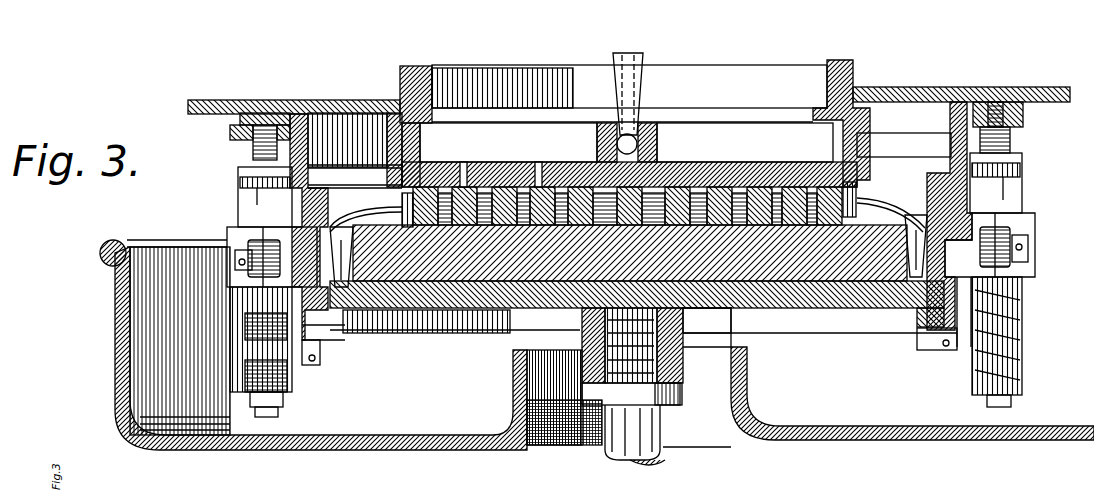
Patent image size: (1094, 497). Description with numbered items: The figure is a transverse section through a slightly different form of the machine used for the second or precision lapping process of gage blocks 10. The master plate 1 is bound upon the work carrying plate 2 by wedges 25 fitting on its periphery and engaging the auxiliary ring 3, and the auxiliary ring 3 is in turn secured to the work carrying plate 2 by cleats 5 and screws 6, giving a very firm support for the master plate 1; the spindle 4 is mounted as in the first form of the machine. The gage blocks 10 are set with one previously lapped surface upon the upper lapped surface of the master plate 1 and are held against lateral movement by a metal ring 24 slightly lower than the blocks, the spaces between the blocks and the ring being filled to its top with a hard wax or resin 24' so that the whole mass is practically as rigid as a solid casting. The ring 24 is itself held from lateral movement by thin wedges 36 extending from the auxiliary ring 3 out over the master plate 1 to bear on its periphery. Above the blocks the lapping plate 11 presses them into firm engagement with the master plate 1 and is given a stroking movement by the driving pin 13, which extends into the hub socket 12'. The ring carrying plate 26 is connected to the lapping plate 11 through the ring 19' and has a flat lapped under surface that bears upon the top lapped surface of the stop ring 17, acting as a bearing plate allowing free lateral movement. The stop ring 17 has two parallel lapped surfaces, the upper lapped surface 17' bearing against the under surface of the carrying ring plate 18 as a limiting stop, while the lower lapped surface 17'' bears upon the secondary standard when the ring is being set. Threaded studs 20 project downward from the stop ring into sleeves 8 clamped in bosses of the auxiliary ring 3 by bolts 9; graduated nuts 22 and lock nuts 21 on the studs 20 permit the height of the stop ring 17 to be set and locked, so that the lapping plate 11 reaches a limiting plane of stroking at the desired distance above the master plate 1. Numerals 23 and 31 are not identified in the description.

The master plate 1 is at (817, 273).
The work carrying plate 2 is at (477, 300).
The auxiliary ring 3 is at (1022, 223).
The spindle 4 is at (660, 458).
The cleats 5 is at (345, 343).
The screws 6 is at (320, 358).
The sleeves 8 is at (293, 387).
The bolts 9 is at (243, 265).
The gage blocks 10 is at (577, 187).
The lapping plate 11 is at (765, 167).
The hub socket 12' is at (676, 158).
The driving pin 13 is at (645, 85).
The stop ring 17 is at (911, 145).
The lapped surface 17' is at (1044, 77).
The lapped surface 17'' is at (896, 153).
The carrying ring plate 18 is at (810, 97).
The ring 19' is at (566, 128).
The threaded studs 20 is at (247, 150).
The lock nuts 21 is at (240, 168).
The graduated nuts 22 is at (240, 187).
The pin 23 is at (538, 185).
The metal ring 24 is at (627, 196).
The hard wax or resin 24' is at (482, 304).
The wedges 25 is at (400, 330).
The ring carrying plate 26 is at (292, 103).
The bracket 31 is at (230, 233).
The thin wedges 36 is at (877, 202).